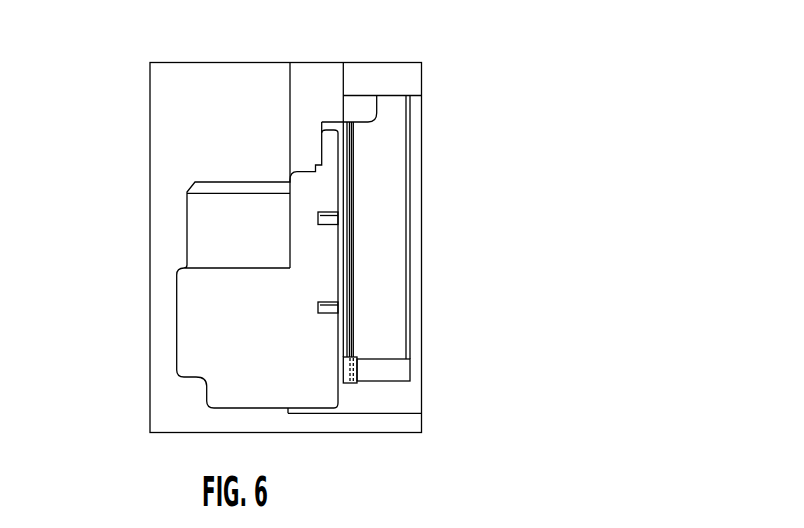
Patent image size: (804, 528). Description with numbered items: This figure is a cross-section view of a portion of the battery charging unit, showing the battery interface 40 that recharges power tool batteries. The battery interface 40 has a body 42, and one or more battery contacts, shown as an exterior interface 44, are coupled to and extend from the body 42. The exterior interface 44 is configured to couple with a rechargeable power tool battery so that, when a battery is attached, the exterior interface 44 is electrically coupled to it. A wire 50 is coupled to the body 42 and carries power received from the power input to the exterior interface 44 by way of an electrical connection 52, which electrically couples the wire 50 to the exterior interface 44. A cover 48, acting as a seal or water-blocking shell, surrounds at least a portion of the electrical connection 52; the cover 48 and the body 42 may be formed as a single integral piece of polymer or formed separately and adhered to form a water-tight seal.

The battery interface 40 is at (532, 97).
The body 42 is at (224, 363).
The exterior interface 44 is at (174, 205).
The cover 48 is at (347, 388).
The wire 50 is at (400, 375).
The electrical connection 52 is at (371, 386).